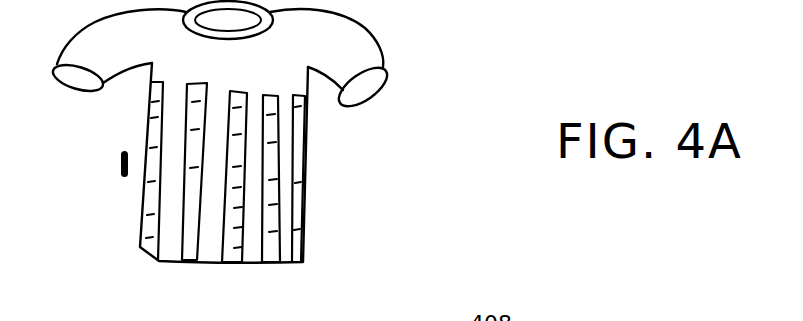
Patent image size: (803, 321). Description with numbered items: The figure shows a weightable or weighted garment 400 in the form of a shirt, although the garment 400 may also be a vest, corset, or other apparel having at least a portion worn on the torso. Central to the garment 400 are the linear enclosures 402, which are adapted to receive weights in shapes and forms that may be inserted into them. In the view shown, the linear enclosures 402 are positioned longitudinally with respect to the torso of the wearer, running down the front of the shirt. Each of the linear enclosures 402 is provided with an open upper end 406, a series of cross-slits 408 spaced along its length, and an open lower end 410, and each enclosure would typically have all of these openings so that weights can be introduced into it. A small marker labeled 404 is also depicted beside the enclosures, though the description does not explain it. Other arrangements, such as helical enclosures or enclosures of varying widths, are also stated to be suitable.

The garment 400 is at (337, 177).
The linear enclosures 402 is at (230, 263).
The marker 404 is at (118, 168).
The open upper end 406 is at (240, 89).
The cross-slits 408 is at (193, 208).
The open lower end 410 is at (270, 265).